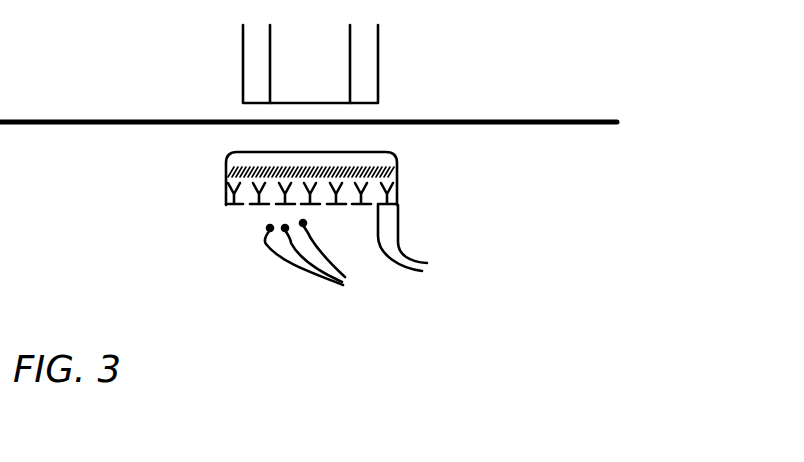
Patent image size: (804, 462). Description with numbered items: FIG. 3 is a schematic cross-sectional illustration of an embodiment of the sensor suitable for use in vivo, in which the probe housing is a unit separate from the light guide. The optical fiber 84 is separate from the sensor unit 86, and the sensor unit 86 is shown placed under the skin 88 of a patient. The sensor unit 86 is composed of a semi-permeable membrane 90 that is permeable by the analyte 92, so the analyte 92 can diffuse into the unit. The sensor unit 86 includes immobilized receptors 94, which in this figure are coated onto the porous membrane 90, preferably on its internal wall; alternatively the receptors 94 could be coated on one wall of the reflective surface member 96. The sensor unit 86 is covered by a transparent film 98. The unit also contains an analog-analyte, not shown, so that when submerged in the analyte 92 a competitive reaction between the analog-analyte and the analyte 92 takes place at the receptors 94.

The optical fiber 84 is at (378, 88).
The skin 88 is at (537, 120).
The sensor unit 86 is at (407, 200).
The semi-permeable membrane 90 is at (253, 205).
The analyte 92 is at (324, 262).
The immobilized receptors 94 is at (423, 238).
The reflective surface member 96 is at (398, 174).
The transparent film 98 is at (222, 158).